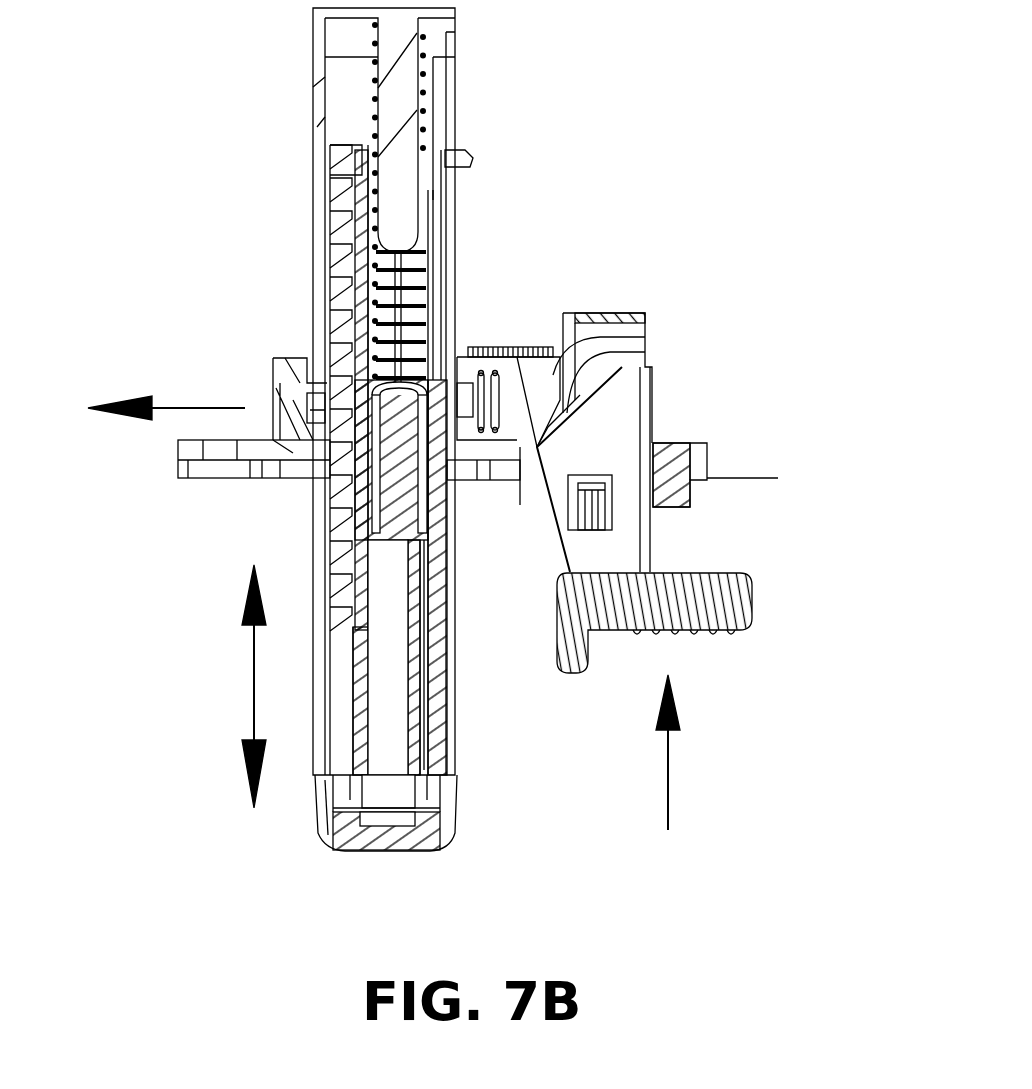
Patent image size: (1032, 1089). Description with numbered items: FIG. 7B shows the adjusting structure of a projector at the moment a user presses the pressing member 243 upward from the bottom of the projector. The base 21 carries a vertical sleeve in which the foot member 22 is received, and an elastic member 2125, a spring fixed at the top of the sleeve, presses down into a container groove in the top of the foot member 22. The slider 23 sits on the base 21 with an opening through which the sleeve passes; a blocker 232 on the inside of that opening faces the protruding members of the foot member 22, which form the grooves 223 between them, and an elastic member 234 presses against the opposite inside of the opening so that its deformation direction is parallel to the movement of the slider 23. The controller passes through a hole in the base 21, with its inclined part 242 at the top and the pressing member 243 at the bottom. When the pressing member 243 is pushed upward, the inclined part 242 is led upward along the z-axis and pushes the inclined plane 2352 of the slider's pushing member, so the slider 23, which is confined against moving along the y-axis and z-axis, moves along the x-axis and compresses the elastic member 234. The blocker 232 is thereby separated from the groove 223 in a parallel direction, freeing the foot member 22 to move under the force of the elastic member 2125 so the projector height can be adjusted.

The base 21 is at (175, 460).
The foot member 22 is at (437, 715).
The slider 23 is at (275, 385).
The grooves 223 is at (345, 332).
The blocker 232 is at (330, 365).
The elastic member 234 is at (452, 352).
The inclined part 242 is at (647, 360).
The pressing member 243 is at (740, 605).
The elastic member 2125 is at (385, 240).
The inclined plane 2352 is at (647, 343).